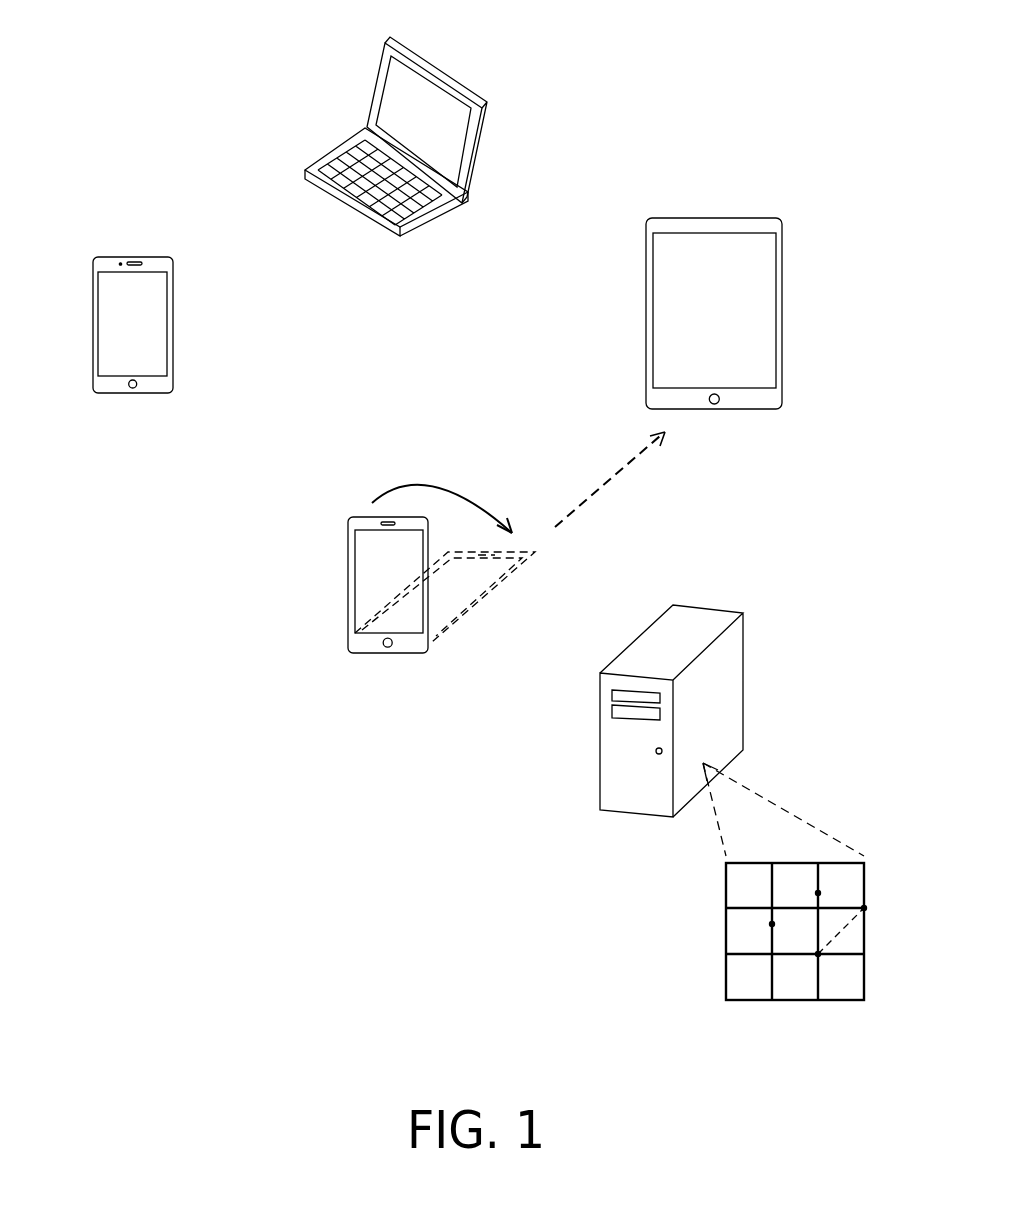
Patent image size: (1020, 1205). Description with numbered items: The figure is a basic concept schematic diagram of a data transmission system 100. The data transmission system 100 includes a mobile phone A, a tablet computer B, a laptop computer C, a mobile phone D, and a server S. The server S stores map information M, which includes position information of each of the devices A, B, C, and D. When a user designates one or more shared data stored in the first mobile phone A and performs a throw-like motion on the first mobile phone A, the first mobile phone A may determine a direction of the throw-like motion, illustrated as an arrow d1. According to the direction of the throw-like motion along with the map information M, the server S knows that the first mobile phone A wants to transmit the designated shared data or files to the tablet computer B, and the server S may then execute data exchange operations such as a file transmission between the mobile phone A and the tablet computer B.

The data transmission system 100 is at (146, 982).
The mobile phone A is at (348, 585).
The tablet computer B is at (765, 410).
The laptop computer C is at (433, 225).
The mobile phone D is at (175, 374).
The arrow d1 is at (613, 477).
The server S is at (600, 742).
The map information M is at (726, 968).